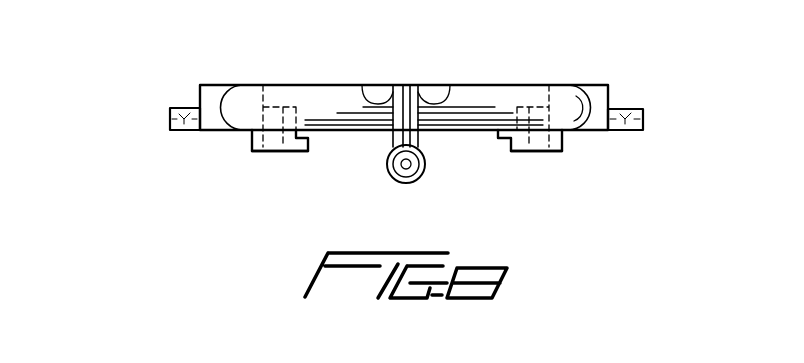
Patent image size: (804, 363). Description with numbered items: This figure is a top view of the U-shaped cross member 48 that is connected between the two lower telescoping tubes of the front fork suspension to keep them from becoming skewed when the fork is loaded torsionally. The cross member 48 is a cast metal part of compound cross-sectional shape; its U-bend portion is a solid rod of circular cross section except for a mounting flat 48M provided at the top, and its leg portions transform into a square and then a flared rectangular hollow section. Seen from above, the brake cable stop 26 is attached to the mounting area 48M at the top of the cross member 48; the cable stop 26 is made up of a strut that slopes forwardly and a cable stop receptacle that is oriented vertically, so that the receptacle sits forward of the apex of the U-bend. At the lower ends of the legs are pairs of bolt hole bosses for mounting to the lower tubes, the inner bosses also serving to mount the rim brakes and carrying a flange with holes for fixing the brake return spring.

The brake cable stop 26 is at (429, 179).
The cross member 48 is at (433, 83).
The mounting flat 48M is at (387, 93).